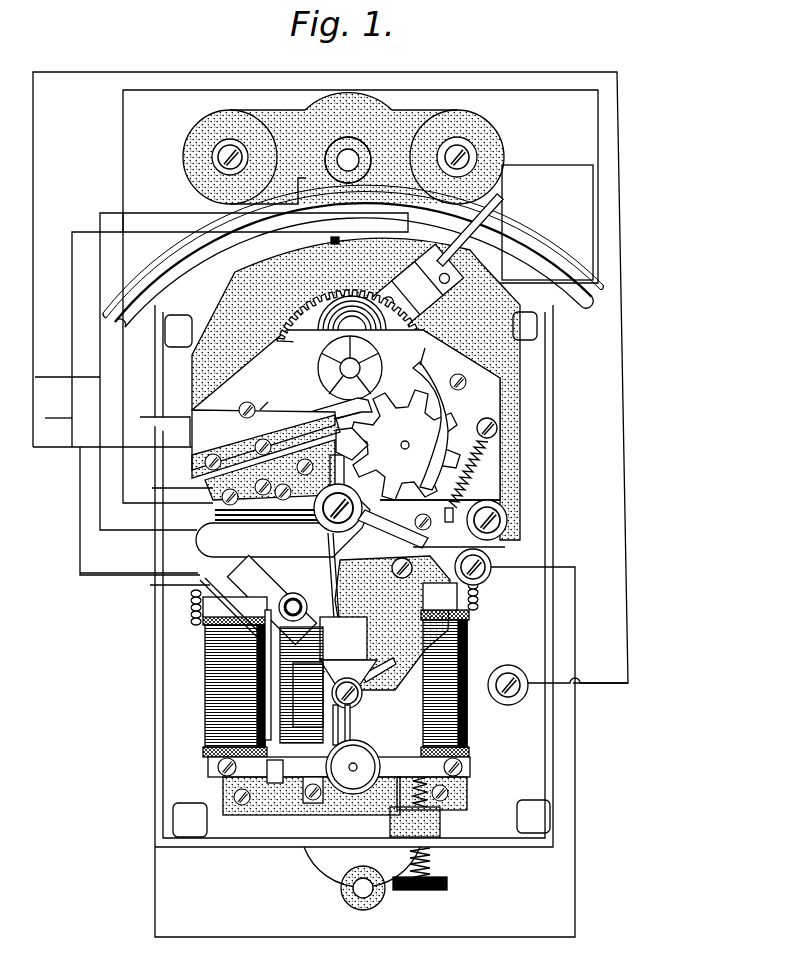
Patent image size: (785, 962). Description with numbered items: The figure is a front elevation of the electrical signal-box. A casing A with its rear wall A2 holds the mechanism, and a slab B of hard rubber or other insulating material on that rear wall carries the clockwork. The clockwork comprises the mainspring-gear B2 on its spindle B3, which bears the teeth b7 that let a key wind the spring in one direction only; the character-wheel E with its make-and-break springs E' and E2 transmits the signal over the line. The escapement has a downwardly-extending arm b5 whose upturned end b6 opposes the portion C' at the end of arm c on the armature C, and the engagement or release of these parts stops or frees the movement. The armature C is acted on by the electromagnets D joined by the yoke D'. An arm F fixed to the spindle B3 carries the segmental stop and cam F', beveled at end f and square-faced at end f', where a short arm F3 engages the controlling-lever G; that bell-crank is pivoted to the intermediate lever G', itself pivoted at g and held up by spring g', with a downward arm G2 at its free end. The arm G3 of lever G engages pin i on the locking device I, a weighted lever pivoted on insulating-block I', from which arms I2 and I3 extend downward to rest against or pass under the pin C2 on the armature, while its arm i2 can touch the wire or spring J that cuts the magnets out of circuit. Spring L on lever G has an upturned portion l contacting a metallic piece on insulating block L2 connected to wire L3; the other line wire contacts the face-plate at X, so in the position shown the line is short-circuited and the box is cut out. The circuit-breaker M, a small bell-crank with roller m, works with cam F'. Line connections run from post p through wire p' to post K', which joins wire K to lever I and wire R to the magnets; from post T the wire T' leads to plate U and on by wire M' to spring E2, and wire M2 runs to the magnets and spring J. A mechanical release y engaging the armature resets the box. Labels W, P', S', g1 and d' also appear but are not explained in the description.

The wire W is at (30, 160).
The wire L3 is at (228, 105).
The wire M' is at (215, 371).
The wire p' is at (56, 426).
The top plate P' is at (318, 148).
The post p is at (199, 146).
The post T is at (486, 149).
The wire T' is at (547, 222).
The slab of insulating material B is at (215, 302).
The casing A is at (556, 470).
The rear wall A2 is at (416, 842).
The mechanical release y is at (424, 848).
The wire M2 is at (587, 735).
The circuit-breaker M is at (416, 275).
The short metallic plate U is at (473, 230).
The mainspring-gear B2 is at (350, 319).
The roller m is at (392, 298).
The teeth b7 is at (342, 368).
The spindle B3 is at (345, 380).
The character-wheel E is at (405, 445).
The arm F is at (416, 426).
The beveled end f is at (426, 351).
The segmental stop and cam F' is at (455, 442).
The short arm F3 is at (341, 476).
The lower circuit make-and-break spring E2 is at (356, 444).
The circuit make-and-break spring E' is at (293, 425).
The plate S' is at (237, 440).
The spring L is at (252, 536).
The contact point on face-plate X is at (258, 395).
The square face f' is at (267, 407).
The upturned portion l is at (220, 500).
The insulating block L2 is at (296, 500).
The controlling-lever G is at (283, 520).
The intermediate lever G' is at (431, 524).
The pivot g is at (517, 460).
The spring g' is at (471, 470).
The downwardly-extending arm G2 is at (290, 597).
The arm G3 is at (389, 611).
The locking device I is at (343, 638).
The pin i is at (332, 650).
The arm i2 is at (372, 672).
The pin g1 is at (320, 645).
The arm c is at (311, 675).
The insulating-block I' is at (321, 704).
The electromagnets D is at (311, 683).
The downwardly-extending arm b5 is at (207, 660).
The upturned portion b6 is at (270, 690).
The post K' is at (293, 603).
The wire R is at (200, 612).
The wire K is at (152, 662).
The armature C is at (290, 776).
The downwardly-extending portion C' is at (231, 770).
The pin C2 is at (330, 768).
The arm I3 is at (359, 761).
The arm I2 is at (435, 768).
The connecting-yoke D' is at (465, 592).
The wire or spring J is at (466, 637).
The terminal screw d' is at (499, 713).